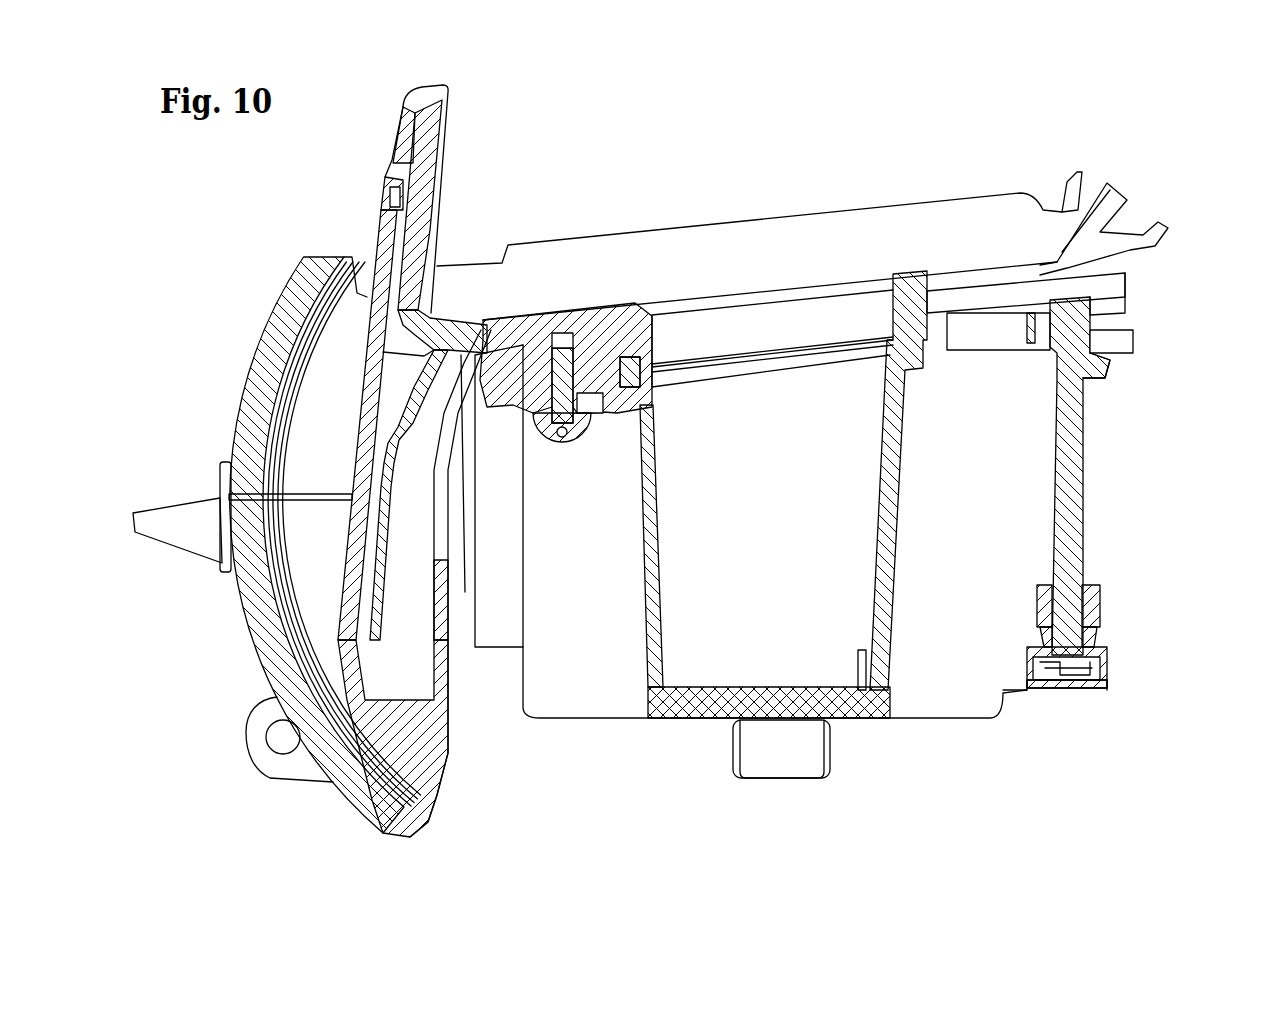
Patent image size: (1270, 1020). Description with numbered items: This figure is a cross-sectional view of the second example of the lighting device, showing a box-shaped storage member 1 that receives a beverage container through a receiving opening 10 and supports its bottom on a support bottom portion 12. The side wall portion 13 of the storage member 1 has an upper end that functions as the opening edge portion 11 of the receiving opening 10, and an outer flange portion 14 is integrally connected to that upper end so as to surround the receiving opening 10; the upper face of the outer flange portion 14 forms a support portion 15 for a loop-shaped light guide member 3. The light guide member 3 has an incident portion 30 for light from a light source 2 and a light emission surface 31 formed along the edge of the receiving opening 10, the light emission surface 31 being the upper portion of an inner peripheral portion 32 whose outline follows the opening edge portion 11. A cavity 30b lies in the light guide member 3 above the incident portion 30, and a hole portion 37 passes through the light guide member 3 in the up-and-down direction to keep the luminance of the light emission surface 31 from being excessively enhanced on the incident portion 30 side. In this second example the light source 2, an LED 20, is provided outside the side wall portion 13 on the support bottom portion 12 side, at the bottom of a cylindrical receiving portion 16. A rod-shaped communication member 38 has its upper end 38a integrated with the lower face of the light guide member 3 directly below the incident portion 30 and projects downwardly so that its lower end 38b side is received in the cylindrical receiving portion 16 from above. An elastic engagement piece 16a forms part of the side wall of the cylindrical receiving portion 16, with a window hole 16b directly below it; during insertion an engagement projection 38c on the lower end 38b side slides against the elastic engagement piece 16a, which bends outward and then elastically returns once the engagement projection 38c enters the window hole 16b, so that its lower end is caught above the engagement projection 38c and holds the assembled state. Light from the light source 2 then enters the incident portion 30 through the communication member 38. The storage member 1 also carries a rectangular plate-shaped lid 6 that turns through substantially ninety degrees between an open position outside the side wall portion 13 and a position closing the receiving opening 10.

The storage member 1 is at (744, 546).
The light source 2 is at (1071, 727).
The LED 20 is at (1082, 690).
The light guide member 3 is at (768, 263).
The light emission surface 31 is at (690, 372).
The inner peripheral portion 32 is at (760, 364).
The lid 6 is at (383, 216).
The receiving opening 10 is at (800, 288).
The opening edge portion 11 is at (843, 344).
The support bottom portion 12 is at (706, 720).
The side wall portion 13 is at (641, 610).
The outer flange portion 14 is at (580, 417).
The support portion 15 is at (600, 426).
The cylindrical receiving portion 16 is at (1075, 667).
The elastic engagement piece 16a is at (1037, 617).
The window hole 16b is at (1040, 647).
The incident portion 30 is at (1076, 306).
The cavity 30b is at (1127, 301).
The hole portion 37 is at (983, 324).
The communication member 38 is at (1120, 476).
The upper end 38a is at (1100, 375).
The lower end 38b is at (1105, 678).
The engagement projection 38c is at (1040, 636).